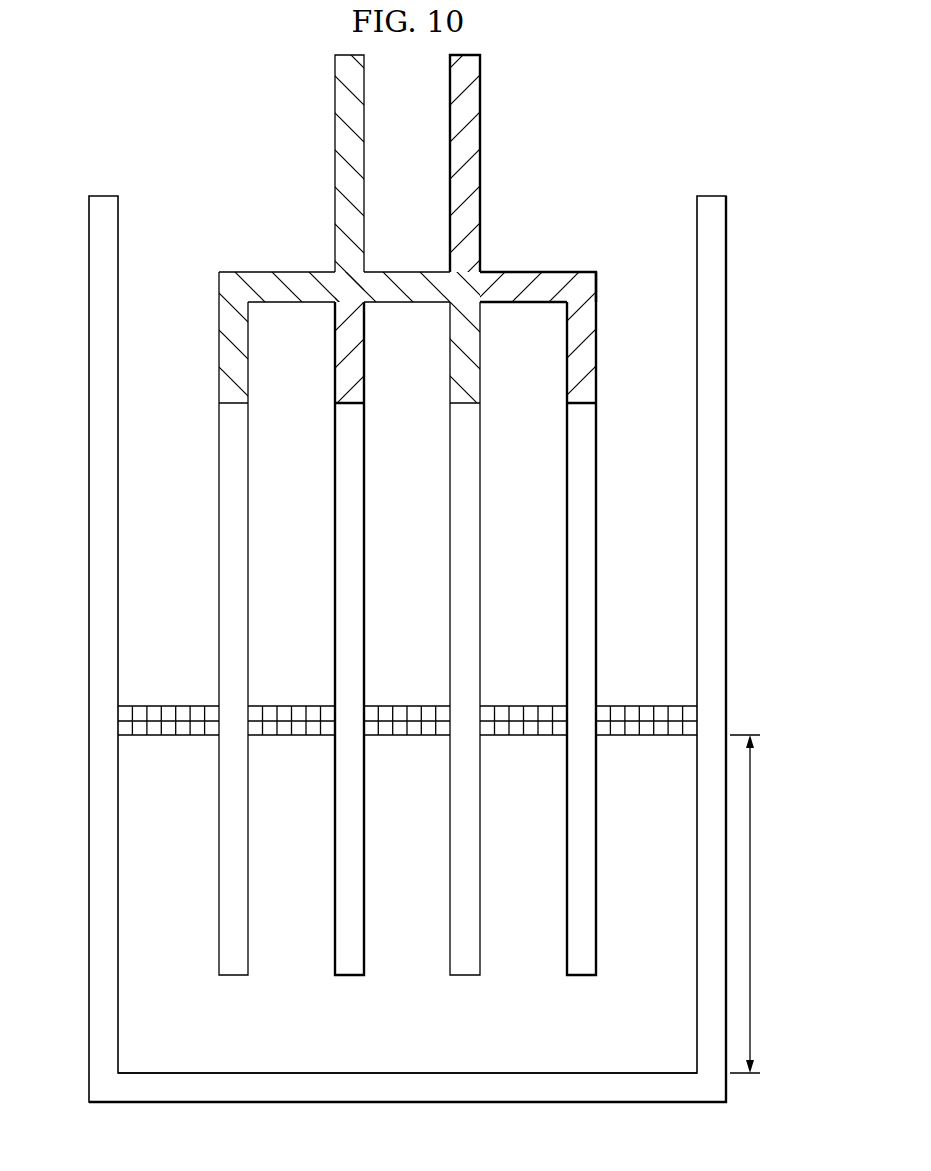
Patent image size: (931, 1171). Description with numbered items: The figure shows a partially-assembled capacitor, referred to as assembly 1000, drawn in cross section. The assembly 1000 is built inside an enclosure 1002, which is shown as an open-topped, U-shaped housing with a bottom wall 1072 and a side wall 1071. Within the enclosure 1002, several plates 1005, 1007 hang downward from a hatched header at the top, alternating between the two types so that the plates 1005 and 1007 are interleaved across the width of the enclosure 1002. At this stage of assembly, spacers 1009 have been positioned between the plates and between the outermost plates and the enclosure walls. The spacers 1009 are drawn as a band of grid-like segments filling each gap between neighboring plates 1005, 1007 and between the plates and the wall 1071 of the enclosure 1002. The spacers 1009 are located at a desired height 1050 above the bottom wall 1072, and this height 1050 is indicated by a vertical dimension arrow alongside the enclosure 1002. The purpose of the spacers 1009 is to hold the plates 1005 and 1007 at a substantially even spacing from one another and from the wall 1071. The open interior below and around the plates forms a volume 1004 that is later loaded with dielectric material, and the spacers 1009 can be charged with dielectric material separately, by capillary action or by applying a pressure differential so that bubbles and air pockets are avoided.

The assembly 1000 is at (422, 515).
The enclosure 1002 is at (710, 196).
The volume 1004 is at (670, 1045).
The plates 1005 is at (218, 540).
The plates 1007 is at (334, 540).
The spacers 1009 is at (168, 736).
The desired height 1050 is at (751, 905).
The wall 1071 is at (697, 427).
The bottom wall 1072 is at (408, 1072).